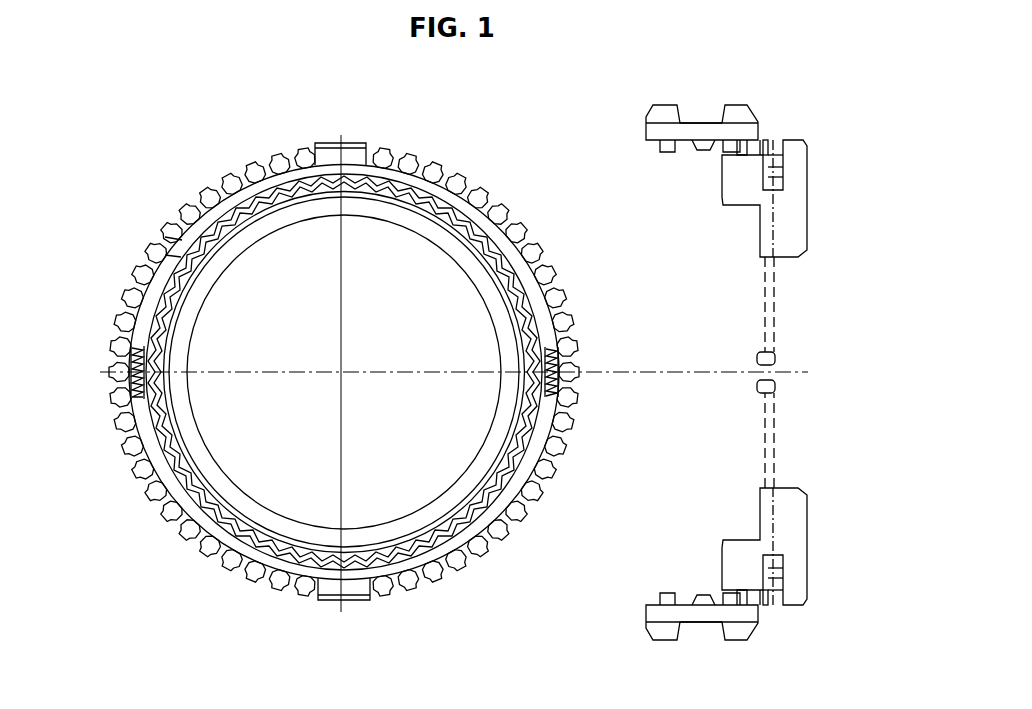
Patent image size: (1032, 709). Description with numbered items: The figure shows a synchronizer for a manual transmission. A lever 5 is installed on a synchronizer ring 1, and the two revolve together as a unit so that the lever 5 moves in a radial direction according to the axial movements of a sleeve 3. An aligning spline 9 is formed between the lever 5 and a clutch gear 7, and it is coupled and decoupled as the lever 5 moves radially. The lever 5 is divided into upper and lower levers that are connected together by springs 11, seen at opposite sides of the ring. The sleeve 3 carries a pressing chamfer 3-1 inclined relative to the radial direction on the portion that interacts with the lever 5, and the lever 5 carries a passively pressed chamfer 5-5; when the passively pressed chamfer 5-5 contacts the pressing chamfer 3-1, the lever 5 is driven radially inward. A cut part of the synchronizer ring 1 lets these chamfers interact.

The synchronizer ring 1 is at (733, 180).
The sleeve 3 is at (648, 128).
The pressing chamfer 3-1 is at (743, 155).
The lever 5 is at (358, 598).
The passively pressed chamfer 5-5 is at (755, 140).
The clutch gear 7 is at (483, 453).
The aligning spline 9 is at (388, 184).
The springs 11 is at (122, 353).